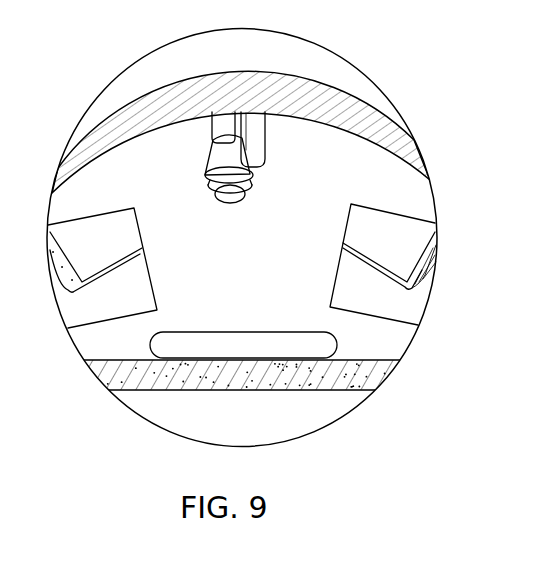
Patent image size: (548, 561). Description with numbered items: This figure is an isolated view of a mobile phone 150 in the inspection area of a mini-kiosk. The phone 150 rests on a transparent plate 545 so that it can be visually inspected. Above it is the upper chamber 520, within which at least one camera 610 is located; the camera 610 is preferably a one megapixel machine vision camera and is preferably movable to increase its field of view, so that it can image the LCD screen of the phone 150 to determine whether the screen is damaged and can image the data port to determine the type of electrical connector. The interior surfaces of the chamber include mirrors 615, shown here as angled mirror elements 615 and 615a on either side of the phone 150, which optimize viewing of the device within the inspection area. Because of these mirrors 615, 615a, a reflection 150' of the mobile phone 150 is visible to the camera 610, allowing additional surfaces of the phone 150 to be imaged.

The upper chamber 520 is at (383, 103).
The transparent plate 545 is at (392, 368).
The camera 610 is at (254, 179).
The mirrors 615 is at (420, 304).
The left bracket block 615a is at (72, 313).
The mobile phone 150 is at (312, 344).
The reflection of a mobile phone 150' is at (264, 216).